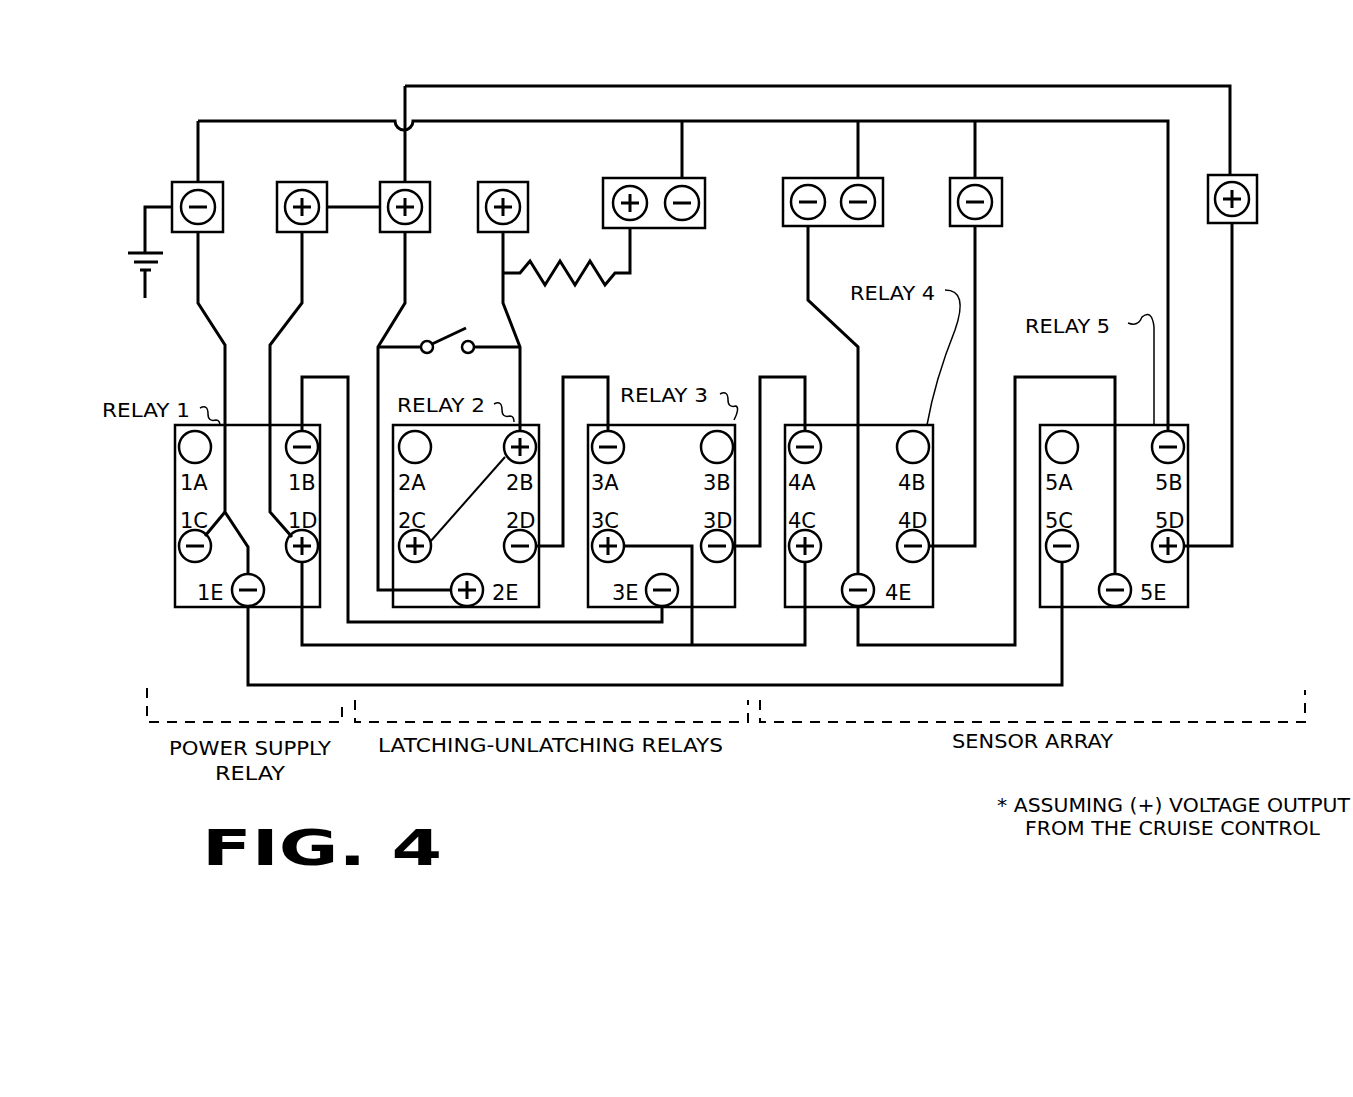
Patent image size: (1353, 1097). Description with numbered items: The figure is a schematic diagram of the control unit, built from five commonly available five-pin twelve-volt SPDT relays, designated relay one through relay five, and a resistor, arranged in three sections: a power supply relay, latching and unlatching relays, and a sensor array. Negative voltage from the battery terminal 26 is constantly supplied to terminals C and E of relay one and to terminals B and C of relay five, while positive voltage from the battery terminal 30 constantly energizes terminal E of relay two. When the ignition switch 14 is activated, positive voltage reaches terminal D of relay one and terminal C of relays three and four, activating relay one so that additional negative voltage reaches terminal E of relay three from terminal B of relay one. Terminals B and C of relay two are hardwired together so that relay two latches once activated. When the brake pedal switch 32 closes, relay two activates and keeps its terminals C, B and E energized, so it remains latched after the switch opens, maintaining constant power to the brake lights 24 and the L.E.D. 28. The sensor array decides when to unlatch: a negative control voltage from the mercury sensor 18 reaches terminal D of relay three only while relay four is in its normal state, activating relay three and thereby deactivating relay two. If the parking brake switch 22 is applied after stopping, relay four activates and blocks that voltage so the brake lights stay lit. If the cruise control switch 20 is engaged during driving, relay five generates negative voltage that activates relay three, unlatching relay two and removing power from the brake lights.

The ignition switch 14 is at (277, 216).
The mercury sensor 18 is at (783, 218).
The cruise control switch 20 is at (1257, 217).
The parking brake switch 22 is at (1002, 216).
The brake lights 24 is at (530, 200).
The battery terminal 26 is at (188, 182).
The L.E.D. 28 is at (655, 228).
The battery terminal 30 is at (380, 222).
The brake pedal switch 32 is at (461, 330).